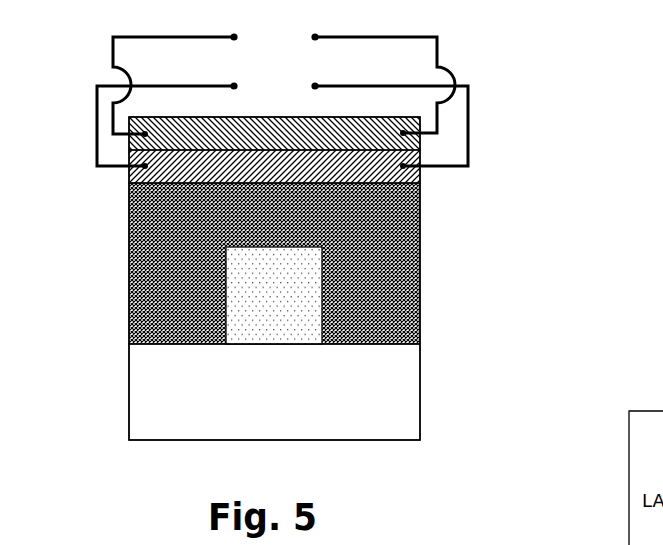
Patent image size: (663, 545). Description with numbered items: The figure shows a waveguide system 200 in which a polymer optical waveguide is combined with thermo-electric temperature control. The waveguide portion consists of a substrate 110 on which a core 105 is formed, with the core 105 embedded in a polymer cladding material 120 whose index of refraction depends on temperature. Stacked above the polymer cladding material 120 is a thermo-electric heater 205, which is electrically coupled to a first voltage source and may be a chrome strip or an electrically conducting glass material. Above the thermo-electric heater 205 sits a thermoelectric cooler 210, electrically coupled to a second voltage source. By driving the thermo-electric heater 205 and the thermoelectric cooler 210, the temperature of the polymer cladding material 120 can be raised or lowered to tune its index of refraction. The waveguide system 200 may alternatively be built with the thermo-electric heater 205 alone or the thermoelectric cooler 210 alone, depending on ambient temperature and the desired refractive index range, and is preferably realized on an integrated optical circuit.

The waveguide system 200 is at (336, 252).
The thermoelectric cooler 210 is at (191, 140).
The thermo-electric heater 205 is at (373, 173).
The polymer cladding material 120 is at (412, 263).
The core 105 is at (271, 334).
The substrate 110 is at (375, 432).